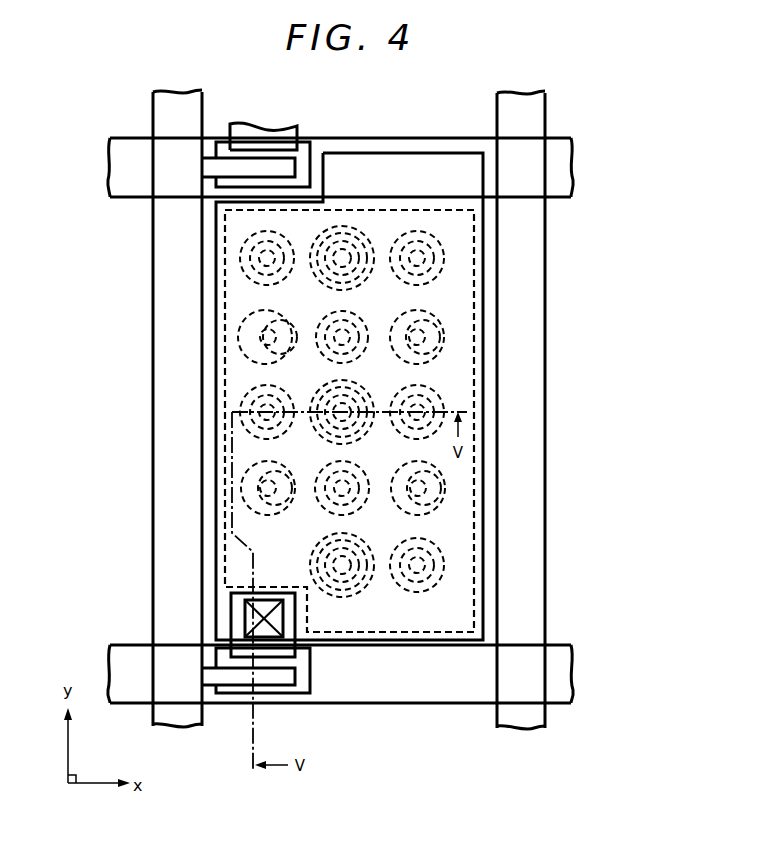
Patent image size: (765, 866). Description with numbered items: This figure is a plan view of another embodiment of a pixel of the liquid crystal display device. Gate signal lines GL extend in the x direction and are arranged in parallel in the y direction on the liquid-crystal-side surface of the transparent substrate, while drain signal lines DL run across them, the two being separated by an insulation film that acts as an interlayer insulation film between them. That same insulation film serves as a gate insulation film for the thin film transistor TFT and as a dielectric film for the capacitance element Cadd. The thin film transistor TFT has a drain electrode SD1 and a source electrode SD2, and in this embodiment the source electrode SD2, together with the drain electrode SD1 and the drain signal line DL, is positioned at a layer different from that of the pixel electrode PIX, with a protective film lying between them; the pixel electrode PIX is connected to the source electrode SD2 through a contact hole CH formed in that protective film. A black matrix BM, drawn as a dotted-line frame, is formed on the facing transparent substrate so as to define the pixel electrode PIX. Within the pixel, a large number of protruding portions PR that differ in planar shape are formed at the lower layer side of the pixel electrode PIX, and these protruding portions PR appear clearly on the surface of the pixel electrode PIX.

The gate signal line GL is at (572, 158).
The drain signal line DL is at (178, 718).
The capacitance element Cadd is at (444, 168).
The pixel electrode PIX is at (483, 413).
The black matrix BM is at (473, 270).
The protruding portion PR is at (240, 242).
The contact hole CH is at (247, 620).
The drain electrode SD1 is at (228, 697).
The source electrode SD2 is at (232, 625).
The thin film transistor TFT is at (277, 695).